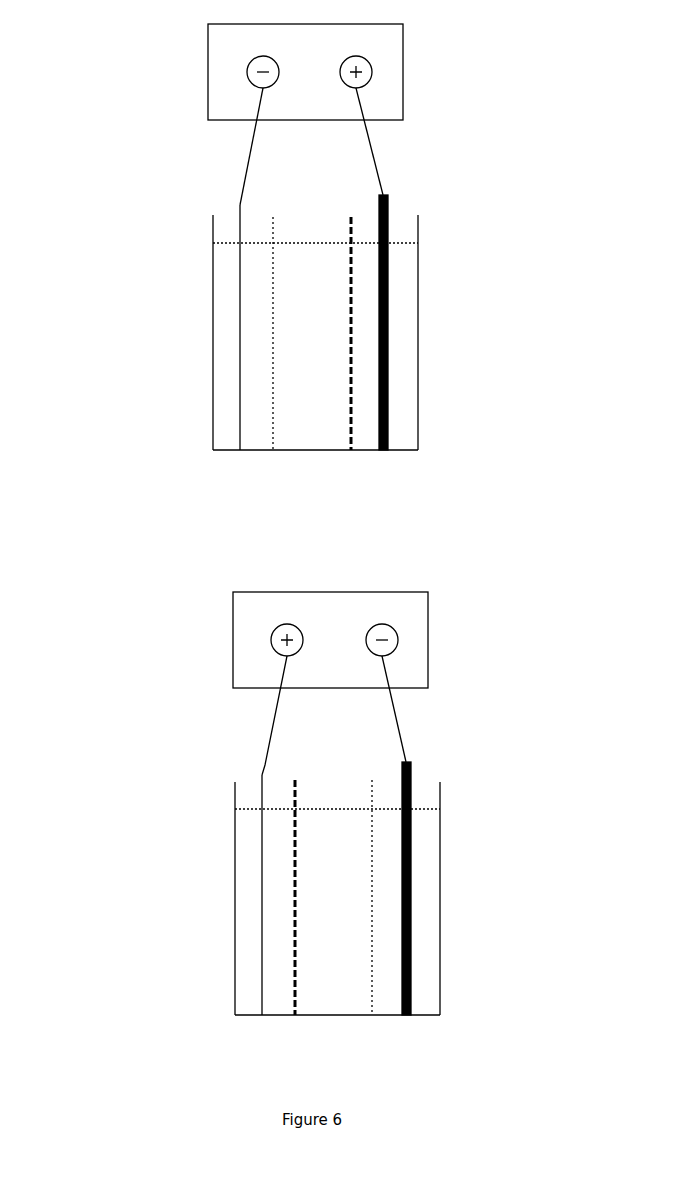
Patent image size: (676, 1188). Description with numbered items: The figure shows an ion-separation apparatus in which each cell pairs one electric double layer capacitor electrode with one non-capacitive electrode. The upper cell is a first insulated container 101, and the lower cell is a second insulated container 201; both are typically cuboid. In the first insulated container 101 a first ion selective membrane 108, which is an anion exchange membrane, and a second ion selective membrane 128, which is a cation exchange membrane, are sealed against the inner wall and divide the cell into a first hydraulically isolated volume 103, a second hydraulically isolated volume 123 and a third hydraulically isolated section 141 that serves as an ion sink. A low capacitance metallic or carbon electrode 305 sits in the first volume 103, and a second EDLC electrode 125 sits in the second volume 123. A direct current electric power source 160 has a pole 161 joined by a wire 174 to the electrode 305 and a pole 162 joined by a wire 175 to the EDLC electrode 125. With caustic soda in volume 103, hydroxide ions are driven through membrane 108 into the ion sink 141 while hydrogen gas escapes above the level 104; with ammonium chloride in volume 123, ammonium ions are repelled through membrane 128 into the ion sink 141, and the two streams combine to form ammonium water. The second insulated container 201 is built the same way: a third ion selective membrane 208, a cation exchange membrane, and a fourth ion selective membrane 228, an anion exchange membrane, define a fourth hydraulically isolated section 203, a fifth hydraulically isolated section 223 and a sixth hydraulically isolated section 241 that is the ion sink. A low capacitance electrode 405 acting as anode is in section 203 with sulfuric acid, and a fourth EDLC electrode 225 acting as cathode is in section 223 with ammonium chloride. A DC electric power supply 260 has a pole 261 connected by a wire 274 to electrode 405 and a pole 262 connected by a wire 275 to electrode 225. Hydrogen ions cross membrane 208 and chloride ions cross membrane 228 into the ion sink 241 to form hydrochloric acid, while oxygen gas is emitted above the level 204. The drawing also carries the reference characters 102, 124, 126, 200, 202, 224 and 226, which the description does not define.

The first insulated container 101 is at (300, 452).
The vessel side wall 102 is at (427, 430).
The first hydraulically isolated volume 103 is at (220, 383).
The level 104 is at (225, 243).
The first ion selective membrane 108 is at (272, 262).
The second hydraulically isolated volume 123 is at (402, 400).
The anode electrode 124 is at (402, 242).
The second EDLC electrode 125 is at (388, 322).
The electrolyte 126 is at (316, 243).
The second ion selective membrane 128 is at (353, 270).
The third hydraulically isolated section 141 is at (317, 432).
The direct current electric power source 160 is at (208, 38).
The pole 161 is at (250, 80).
The pole 162 is at (368, 82).
The wire 174 is at (248, 135).
The wire 175 is at (372, 135).
The low capacitance metallic or carbon electrode 305 is at (240, 333).
The electrochemical system 200 is at (283, 801).
The second insulated container 201 is at (320, 1017).
The vessel side wall 202 is at (447, 987).
The fourth hydraulically isolated section 203 is at (240, 943).
The level 204 is at (242, 805).
The third ion selective membrane 208 is at (297, 828).
The fifth hydraulically isolated section 223 is at (425, 942).
The cathode electrode 224 is at (412, 810).
The fourth EDLC electrode 225 is at (412, 867).
The electrolyte 226 is at (327, 809).
The fourth ion selective membrane 228 is at (373, 835).
The sixth hydraulically isolated section 241 is at (340, 983).
The DC electric power supply 260 is at (362, 592).
The pole 261 is at (265, 635).
The pole 262 is at (402, 637).
The wire 274 is at (273, 700).
The wire 275 is at (400, 705).
The low capacitance electrode 405 is at (262, 888).